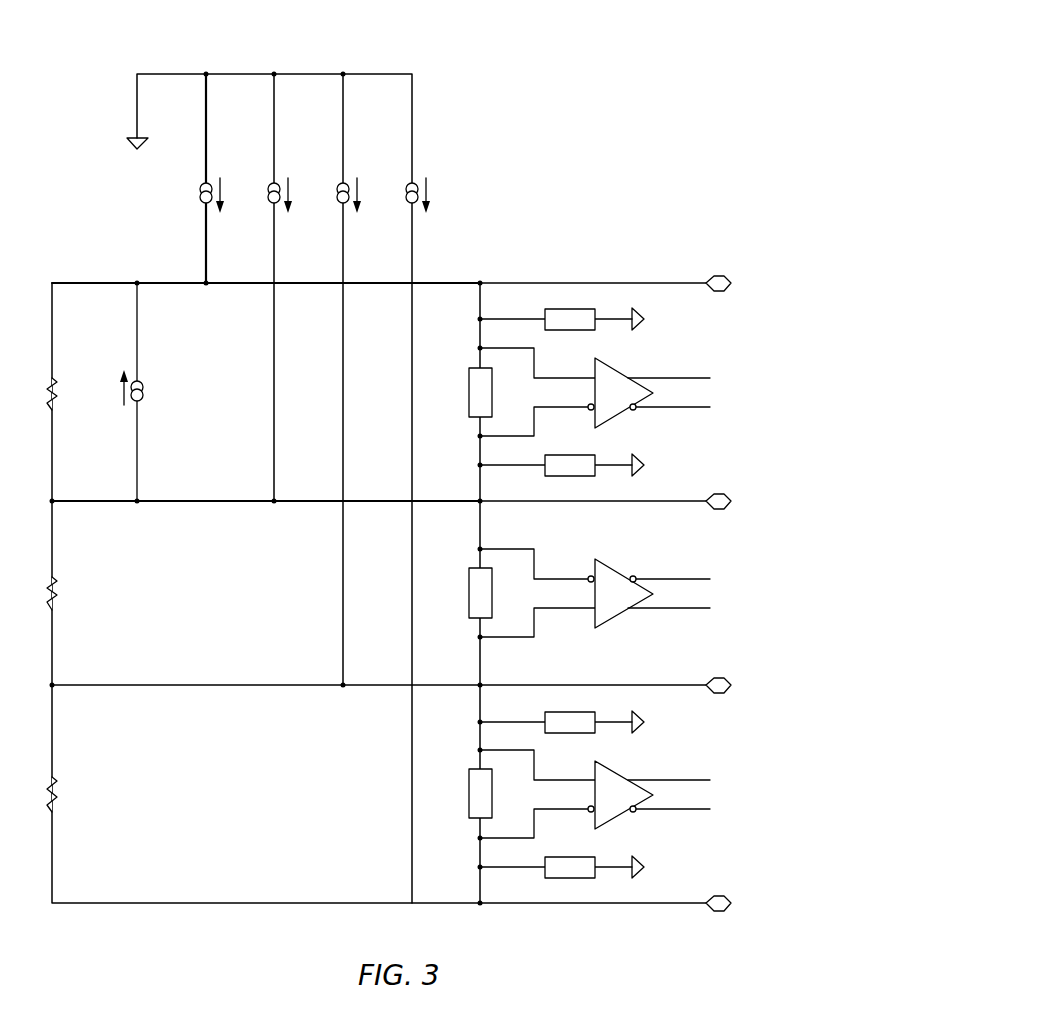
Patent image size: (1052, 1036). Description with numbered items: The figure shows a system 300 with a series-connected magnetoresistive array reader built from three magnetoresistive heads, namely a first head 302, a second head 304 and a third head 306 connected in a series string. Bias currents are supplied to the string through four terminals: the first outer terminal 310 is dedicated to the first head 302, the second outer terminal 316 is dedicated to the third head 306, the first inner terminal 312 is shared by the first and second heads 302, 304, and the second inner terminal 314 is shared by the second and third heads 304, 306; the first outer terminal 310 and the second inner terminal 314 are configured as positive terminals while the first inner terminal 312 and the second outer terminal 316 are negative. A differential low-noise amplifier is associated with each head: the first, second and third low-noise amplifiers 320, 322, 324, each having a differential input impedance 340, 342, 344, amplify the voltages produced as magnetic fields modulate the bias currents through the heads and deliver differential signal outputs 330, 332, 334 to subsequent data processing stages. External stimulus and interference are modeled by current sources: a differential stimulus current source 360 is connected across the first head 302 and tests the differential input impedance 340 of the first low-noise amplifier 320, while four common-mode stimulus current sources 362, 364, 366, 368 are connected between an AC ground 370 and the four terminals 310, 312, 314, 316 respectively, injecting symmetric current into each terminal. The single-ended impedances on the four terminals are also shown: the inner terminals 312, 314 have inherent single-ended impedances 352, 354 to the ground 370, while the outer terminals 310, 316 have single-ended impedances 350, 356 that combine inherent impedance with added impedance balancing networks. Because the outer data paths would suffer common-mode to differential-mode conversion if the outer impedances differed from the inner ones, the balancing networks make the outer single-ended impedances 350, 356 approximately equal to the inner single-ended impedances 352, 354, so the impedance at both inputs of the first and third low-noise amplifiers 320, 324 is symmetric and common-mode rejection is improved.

The system 300 is at (664, 58).
The magnetoresistive head RMRa 302 is at (52, 378).
The magnetoresistive head RMRb 304 is at (52, 577).
The magnetoresistive head RMRc 306 is at (52, 777).
The terminal HRPA 310 is at (720, 292).
The terminal HRNAB 312 is at (720, 510).
The terminal HRPBC 314 is at (720, 694).
The terminal HRNC 316 is at (720, 912).
The low-noise amplifier LNAa 320 is at (619, 411).
The low-noise amplifier LNAb 322 is at (619, 611).
The low-noise amplifier LNAc 324 is at (619, 812).
The differential signal output Vo_a 330 is at (735, 412).
The differential signal output Vo_b 332 is at (735, 612).
The differential signal output Vo_c 334 is at (735, 814).
The differential input impedance ZD 340 is at (469, 414).
The differential input impedance ZD 342 is at (469, 615).
The differential input impedance ZD 344 is at (469, 816).
The single-ended impedance ZSEo 350 is at (576, 308).
The single-ended impedance ZSEi 352 is at (576, 477).
The single-ended impedance ZSEi 354 is at (576, 711).
The single-ended impedance ZSEo 356 is at (576, 879).
The current source I0 360 is at (144, 394).
The current source I1 362 is at (201, 195).
The current source I2 364 is at (269, 195).
The current source I3 366 is at (338, 195).
The current source I4 368 is at (407, 195).
The AC ground 370 is at (134, 144).